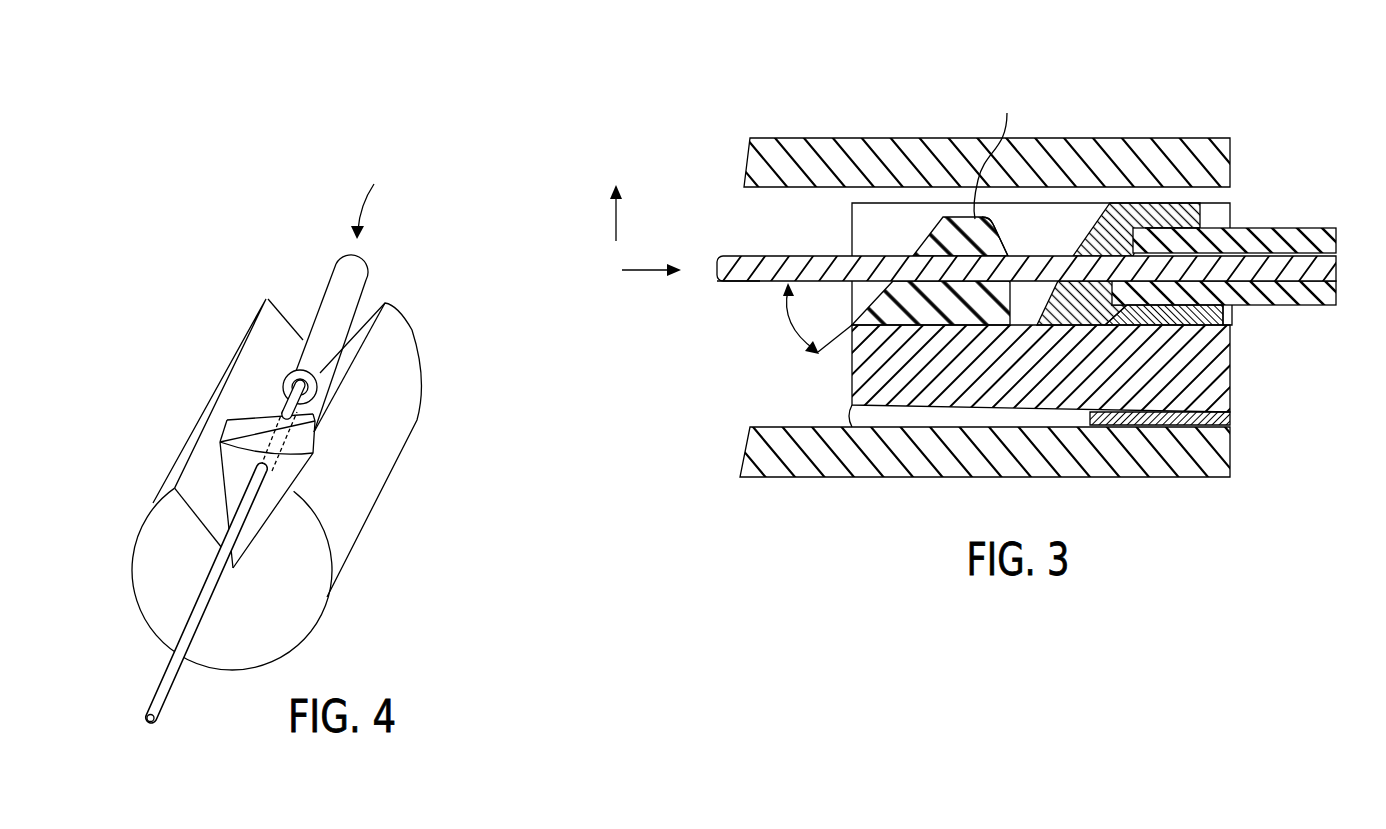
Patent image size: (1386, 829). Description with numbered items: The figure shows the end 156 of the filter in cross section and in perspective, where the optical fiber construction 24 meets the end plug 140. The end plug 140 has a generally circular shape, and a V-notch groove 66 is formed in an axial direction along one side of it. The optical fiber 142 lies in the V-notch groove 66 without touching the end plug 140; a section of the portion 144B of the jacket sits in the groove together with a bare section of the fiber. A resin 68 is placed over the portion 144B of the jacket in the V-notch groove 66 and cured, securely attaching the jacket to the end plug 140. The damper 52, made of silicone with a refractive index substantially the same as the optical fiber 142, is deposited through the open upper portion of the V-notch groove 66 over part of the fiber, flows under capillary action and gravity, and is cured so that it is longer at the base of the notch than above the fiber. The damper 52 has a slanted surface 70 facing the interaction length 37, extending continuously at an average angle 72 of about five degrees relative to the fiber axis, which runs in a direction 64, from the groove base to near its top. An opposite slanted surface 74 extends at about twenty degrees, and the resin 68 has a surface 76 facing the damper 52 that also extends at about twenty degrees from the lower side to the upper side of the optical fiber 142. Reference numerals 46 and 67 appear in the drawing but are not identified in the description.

In FIG. 4, the optical fiber construction 24 is at (372, 197).
In FIG. 3, the interaction length 37 is at (757, 282).
In FIG. 4, the guide wire 46 is at (172, 684).
In FIG. 3, the damper 52 is at (996, 154).
In FIG. 3, the direction 64 is at (651, 259).
In FIG. 3, the V-notch groove 66 is at (855, 220).
In FIG. 4, the V-notch groove 66 is at (275, 348).
In FIG. 3, the radial direction 67 is at (601, 213).
In FIG. 3, the resin 68 is at (1203, 227).
In FIG. 3, the slanted surface 70 is at (929, 238).
In FIG. 4, the slanted surface 70 is at (235, 462).
In FIG. 3, the average angle 72 is at (806, 318).
In FIG. 4, the average angle 72 is at (263, 407).
In FIG. 3, the slanted surface 74 is at (998, 249).
In FIG. 3, the surface 76 is at (1091, 242).
In FIG. 3, the end plug 140 is at (1232, 376).
In FIG. 4, the end plug 140 is at (390, 436).
In FIG. 3, the optical fiber 142 is at (757, 256).
In FIG. 3, the portion of the jacket 144B is at (1277, 228).
In FIG. 3, the end 156 is at (1185, 137).